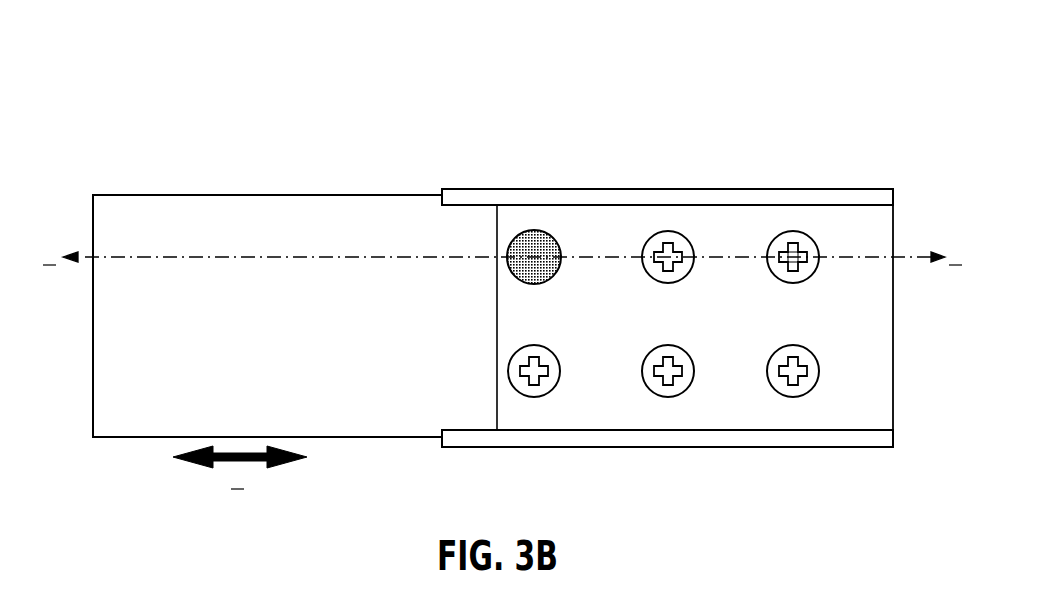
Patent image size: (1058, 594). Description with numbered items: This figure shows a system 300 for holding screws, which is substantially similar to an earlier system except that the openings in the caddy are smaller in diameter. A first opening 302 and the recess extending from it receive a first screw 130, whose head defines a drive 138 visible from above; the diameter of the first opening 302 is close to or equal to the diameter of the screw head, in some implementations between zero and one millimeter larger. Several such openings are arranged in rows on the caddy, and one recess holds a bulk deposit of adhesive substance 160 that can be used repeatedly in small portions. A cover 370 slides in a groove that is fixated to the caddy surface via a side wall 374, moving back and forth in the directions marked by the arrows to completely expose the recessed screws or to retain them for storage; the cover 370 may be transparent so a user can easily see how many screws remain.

The system 300 is at (173, 91).
The cover 370 is at (245, 195).
The side wall 374 is at (674, 194).
The adhesive substance 160 is at (522, 240).
The first screw 130 is at (803, 277).
The first opening 302 is at (795, 233).
The drive 138 is at (800, 257).